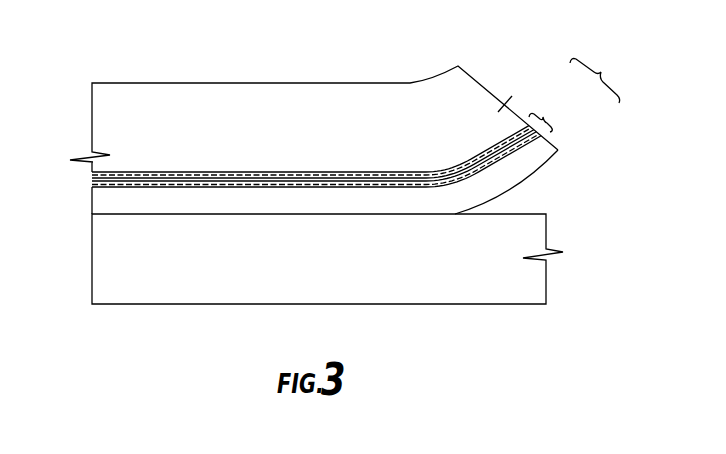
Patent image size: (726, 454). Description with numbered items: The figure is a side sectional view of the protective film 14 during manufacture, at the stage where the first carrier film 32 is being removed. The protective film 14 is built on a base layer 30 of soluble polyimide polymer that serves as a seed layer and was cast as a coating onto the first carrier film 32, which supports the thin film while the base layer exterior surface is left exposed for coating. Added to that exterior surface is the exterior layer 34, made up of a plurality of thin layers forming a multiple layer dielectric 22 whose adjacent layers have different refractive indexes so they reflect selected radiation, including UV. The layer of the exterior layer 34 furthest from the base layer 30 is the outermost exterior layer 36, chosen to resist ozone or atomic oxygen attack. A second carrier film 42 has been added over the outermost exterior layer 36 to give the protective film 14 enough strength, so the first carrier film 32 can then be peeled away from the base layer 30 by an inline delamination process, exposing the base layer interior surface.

The protective film 14 is at (601, 73).
The multiple layer dielectric 22 is at (569, 110).
The base layer 30 is at (520, 175).
The first carrier film 32 is at (330, 287).
The exterior layer 34 is at (543, 110).
The outermost exterior layer 36 is at (497, 150).
The second carrier film 42 is at (379, 92).